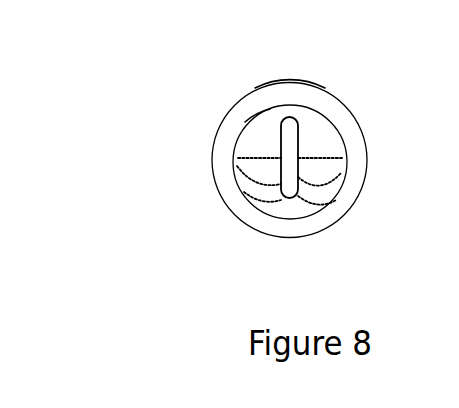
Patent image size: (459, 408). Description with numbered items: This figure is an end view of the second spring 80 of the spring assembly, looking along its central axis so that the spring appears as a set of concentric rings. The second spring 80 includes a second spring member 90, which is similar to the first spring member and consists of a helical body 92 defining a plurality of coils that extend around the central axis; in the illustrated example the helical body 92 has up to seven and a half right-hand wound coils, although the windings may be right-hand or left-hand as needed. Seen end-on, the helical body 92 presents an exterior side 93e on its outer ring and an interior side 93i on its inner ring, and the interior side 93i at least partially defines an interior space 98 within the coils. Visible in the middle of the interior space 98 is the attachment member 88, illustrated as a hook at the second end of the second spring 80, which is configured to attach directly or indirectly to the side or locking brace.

The second spring 80 is at (122, 100).
The attachment member 88 is at (290, 174).
The second spring member 90 is at (357, 200).
The helical body 92 is at (335, 99).
The exterior side 93e is at (287, 82).
The interior side 93i is at (248, 118).
The interior space 98 is at (320, 143).